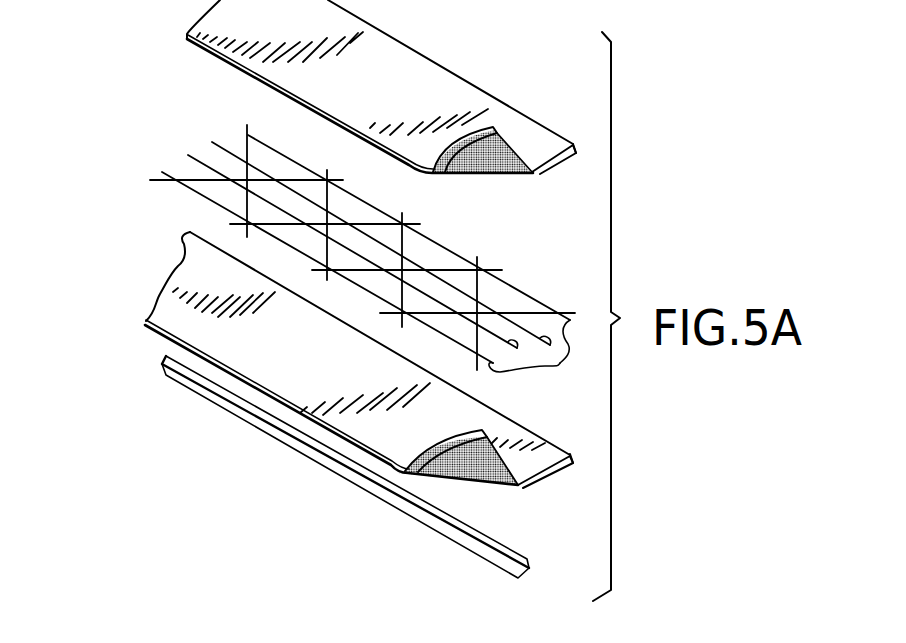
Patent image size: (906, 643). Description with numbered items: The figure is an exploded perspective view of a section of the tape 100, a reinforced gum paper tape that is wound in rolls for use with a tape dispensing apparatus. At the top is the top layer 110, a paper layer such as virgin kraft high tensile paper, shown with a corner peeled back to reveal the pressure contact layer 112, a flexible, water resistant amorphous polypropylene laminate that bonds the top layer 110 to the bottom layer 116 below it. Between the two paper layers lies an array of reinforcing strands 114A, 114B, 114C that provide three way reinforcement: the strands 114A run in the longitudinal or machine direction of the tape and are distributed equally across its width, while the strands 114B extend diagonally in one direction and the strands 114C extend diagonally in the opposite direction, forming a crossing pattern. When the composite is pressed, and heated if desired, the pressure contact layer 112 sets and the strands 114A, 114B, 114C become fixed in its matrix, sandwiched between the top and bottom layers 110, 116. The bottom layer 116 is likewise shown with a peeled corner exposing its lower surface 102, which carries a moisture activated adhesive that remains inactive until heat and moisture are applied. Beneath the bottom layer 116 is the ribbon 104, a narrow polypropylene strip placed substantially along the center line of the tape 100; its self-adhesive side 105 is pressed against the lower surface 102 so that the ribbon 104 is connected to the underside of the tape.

The tape 100 is at (145, 253).
The lower surface 102 is at (487, 486).
The ribbon 104 is at (343, 464).
The self-adhesive side 105 is at (515, 554).
The top layer 110 is at (415, 67).
The pressure contact layer 112 is at (508, 174).
The reinforcing strands 114A is at (372, 267).
The reinforcing strands 114B is at (248, 225).
The reinforcing strands 114C is at (326, 171).
The bottom layer 116 is at (313, 363).